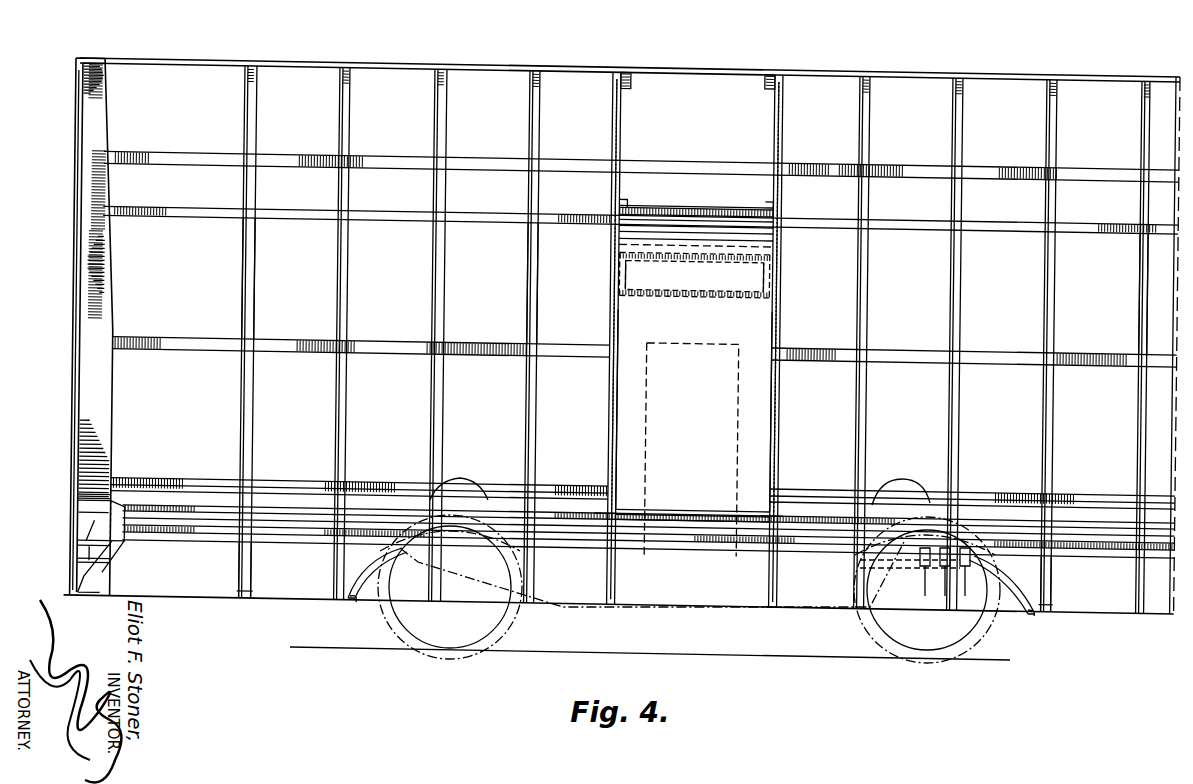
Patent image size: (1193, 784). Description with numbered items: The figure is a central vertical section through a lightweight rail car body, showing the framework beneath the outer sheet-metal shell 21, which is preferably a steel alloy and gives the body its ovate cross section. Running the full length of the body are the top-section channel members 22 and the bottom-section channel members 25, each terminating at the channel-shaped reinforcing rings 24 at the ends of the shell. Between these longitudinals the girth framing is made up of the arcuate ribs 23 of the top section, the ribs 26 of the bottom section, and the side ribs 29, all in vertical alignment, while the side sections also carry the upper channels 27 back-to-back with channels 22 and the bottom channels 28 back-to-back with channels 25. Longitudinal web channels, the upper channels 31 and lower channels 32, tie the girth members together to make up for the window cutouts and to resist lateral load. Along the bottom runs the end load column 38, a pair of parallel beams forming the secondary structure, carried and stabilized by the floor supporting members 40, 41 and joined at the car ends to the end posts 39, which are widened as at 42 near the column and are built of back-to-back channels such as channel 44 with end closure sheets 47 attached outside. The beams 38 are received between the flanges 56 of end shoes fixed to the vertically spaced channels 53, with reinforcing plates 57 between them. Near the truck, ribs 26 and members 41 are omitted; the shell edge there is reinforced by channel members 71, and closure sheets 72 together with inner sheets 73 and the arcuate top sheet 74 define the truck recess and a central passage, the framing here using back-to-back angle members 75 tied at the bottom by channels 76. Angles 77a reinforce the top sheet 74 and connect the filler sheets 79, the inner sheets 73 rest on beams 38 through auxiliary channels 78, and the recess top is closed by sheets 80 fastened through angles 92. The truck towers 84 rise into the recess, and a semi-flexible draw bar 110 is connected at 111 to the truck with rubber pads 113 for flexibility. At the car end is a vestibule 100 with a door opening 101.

The outer sheet-metal shell 21 is at (488, 56).
The channel members 22 is at (408, 151).
The arcuate ribs 23 is at (350, 70).
The reinforcing rings 24 is at (86, 58).
The channel members 25 is at (390, 492).
The ribs 26 is at (242, 596).
The upper channels 27 is at (402, 167).
The bottom channels 28 is at (360, 483).
The ribs 29 is at (252, 291).
The upper channels 31 is at (305, 218).
The lower channels 32 is at (296, 341).
The end load column 38 is at (278, 518).
The end posts 39 is at (106, 136).
The floor supporting members 40 is at (488, 494).
The floor supporting members 41 is at (330, 566).
The widened portion 42 is at (106, 453).
The channel member 44 is at (104, 301).
The end closure sheets 47 is at (76, 334).
The channels 53 is at (94, 500).
The flanges 56 is at (122, 536).
The reinforcing plates 57 is at (90, 520).
The channel members 71 is at (345, 602).
The closure sheets 72 is at (357, 603).
The sheets 73 is at (740, 320).
The top sheet 74 is at (684, 198).
The angle members 75 is at (624, 70).
The channels 76 is at (612, 504).
The angles 77a is at (623, 196).
The auxiliary channels 78 is at (676, 507).
The filler sheets 79 is at (624, 123).
The sheets 80 is at (700, 245).
The towers 84 is at (704, 334).
The angles 92 is at (668, 284).
The vestibules 100 is at (130, 266).
The door openings 101 is at (192, 564).
The draw bar 110 is at (975, 567).
The connection 111 is at (946, 576).
The rubber washers or pads 113 is at (922, 570).